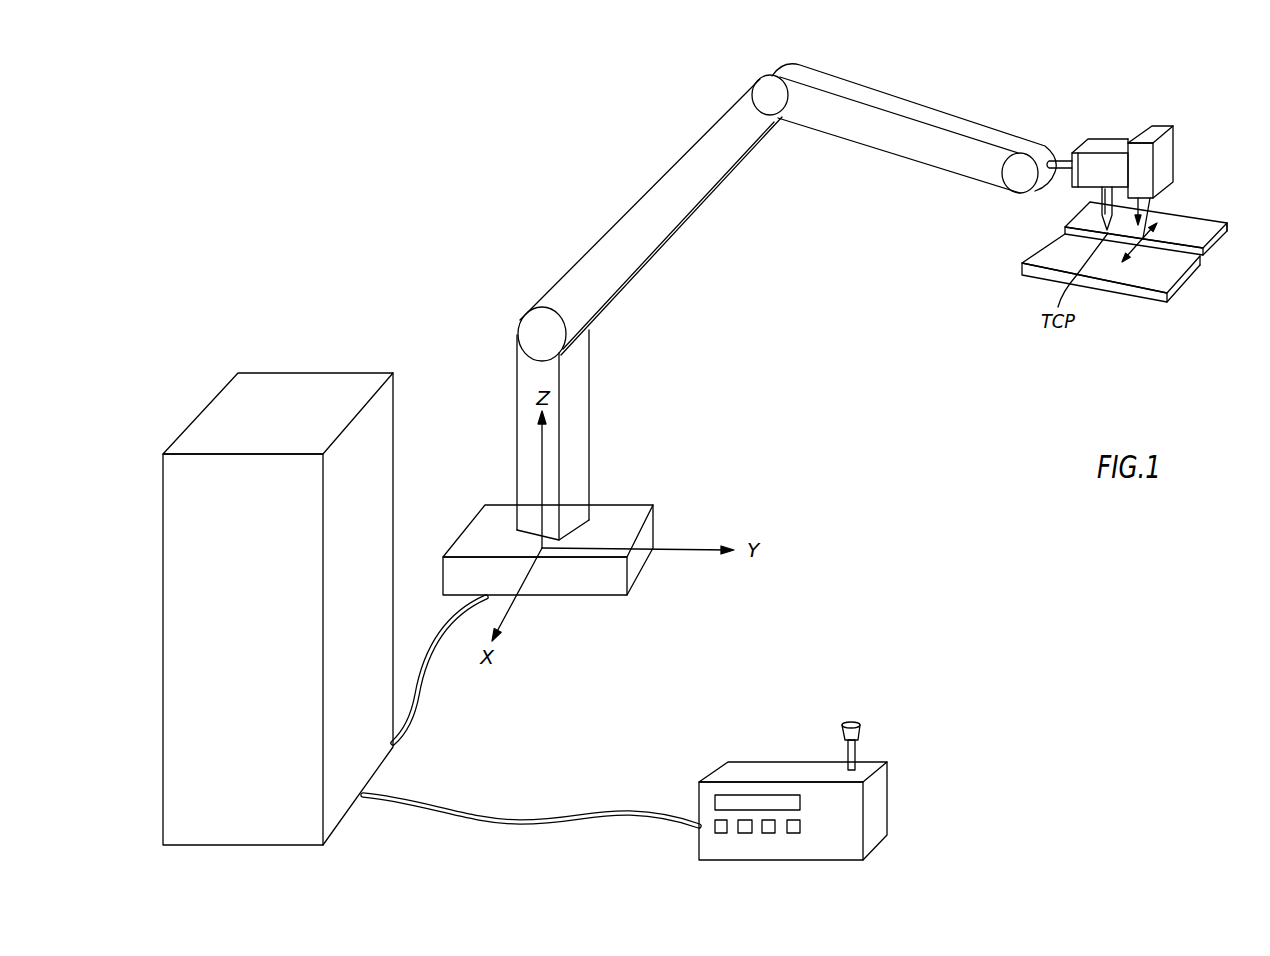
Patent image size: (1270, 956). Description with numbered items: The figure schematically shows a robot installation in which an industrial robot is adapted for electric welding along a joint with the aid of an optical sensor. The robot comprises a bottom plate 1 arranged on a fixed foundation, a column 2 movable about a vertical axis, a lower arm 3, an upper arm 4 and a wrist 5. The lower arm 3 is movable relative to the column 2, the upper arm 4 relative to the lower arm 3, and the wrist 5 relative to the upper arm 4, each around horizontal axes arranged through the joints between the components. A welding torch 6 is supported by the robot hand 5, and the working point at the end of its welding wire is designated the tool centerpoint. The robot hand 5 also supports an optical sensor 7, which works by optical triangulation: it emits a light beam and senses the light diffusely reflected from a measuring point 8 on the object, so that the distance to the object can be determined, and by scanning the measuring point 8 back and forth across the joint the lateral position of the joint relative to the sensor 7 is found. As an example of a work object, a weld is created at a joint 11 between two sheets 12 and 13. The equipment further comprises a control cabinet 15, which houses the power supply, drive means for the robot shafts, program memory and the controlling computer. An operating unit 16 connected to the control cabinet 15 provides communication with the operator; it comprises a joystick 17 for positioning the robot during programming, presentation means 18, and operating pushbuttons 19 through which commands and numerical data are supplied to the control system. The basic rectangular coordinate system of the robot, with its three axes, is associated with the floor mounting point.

The bottom plate 1 is at (633, 510).
The column 2 is at (582, 428).
The lower arm 3 is at (663, 220).
The upper arm 4 is at (890, 143).
The wrist 5 is at (1059, 160).
The welding torch 6 is at (1103, 218).
The optical sensor 7 is at (1171, 154).
The measuring point 8 is at (1143, 238).
The joint 11 is at (1203, 254).
The sheet 12 is at (1182, 280).
The sheet 13 is at (1228, 232).
The control cabinet 15 is at (314, 385).
The operating unit 16 is at (878, 808).
The joystick 17 is at (860, 730).
The presentation means 18 is at (753, 796).
The operating pushbuttons 19 is at (720, 838).